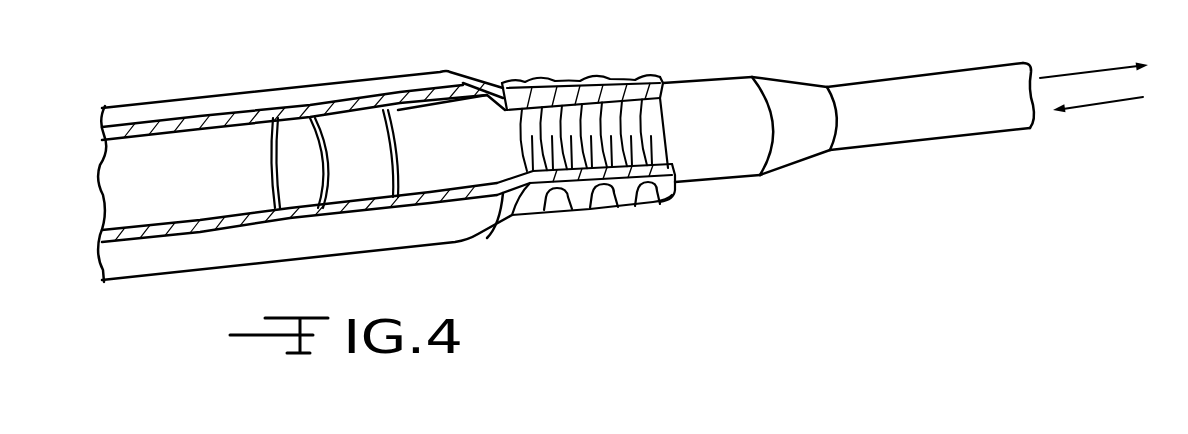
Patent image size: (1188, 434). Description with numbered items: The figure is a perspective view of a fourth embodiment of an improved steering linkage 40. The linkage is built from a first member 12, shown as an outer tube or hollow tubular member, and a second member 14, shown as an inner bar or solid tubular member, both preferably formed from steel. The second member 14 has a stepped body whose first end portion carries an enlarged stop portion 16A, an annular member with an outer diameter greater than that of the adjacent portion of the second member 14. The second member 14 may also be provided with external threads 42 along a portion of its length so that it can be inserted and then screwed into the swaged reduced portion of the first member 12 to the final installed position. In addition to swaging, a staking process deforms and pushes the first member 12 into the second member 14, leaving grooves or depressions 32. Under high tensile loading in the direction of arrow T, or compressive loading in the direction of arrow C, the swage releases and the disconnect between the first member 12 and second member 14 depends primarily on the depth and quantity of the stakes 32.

The first member 12 is at (237, 95).
The enlarged stop portion 16A is at (347, 128).
The external threads 42 is at (562, 118).
The grooves or depressions (stakes) 32 is at (636, 205).
The steering linkage 40 is at (678, 204).
The second member 14 is at (910, 77).
The arrow T (tensile loading direction) T is at (1085, 72).
The arrow C (compressive loading direction) C is at (1107, 103).